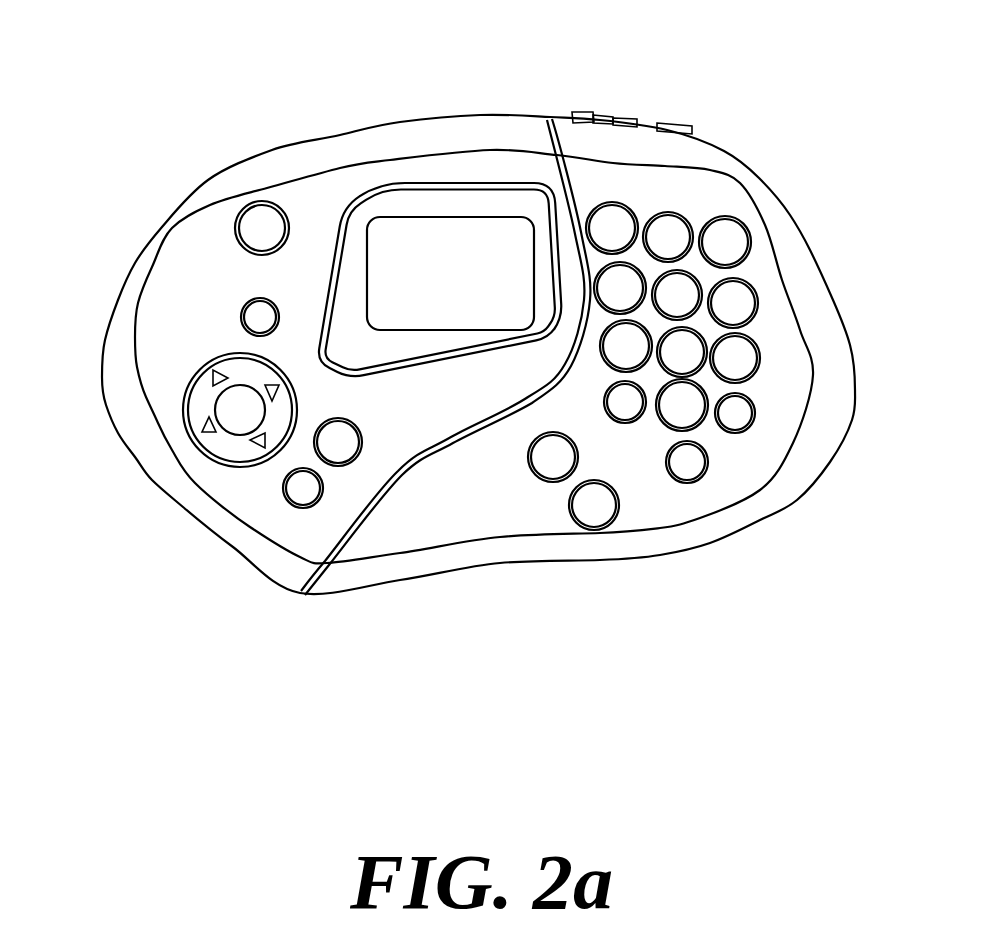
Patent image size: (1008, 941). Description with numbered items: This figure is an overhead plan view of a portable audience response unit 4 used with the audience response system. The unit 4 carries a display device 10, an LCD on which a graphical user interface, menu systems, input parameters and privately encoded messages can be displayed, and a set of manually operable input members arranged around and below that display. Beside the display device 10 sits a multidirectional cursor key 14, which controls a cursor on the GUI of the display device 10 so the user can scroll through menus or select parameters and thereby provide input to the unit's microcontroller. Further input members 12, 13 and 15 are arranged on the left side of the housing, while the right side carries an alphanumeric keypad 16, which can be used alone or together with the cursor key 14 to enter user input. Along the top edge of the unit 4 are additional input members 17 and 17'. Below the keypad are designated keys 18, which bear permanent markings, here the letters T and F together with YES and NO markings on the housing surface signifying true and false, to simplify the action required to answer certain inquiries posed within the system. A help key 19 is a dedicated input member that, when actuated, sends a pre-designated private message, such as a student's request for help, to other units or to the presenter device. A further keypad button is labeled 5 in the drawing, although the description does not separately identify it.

The audience response unit 4 is at (412, 131).
The display device 10 is at (403, 250).
The input member 12 is at (264, 228).
The input member 15 is at (261, 318).
The multidirectional cursor key 14 is at (228, 443).
The input member 13 is at (337, 442).
The help key 19 is at (290, 500).
The input member 17' is at (631, 66).
The input member 17 is at (722, 80).
The alphanumeric keypad 16 is at (725, 243).
The keypad button 5 is at (622, 405).
The designated keys 18 is at (578, 457).